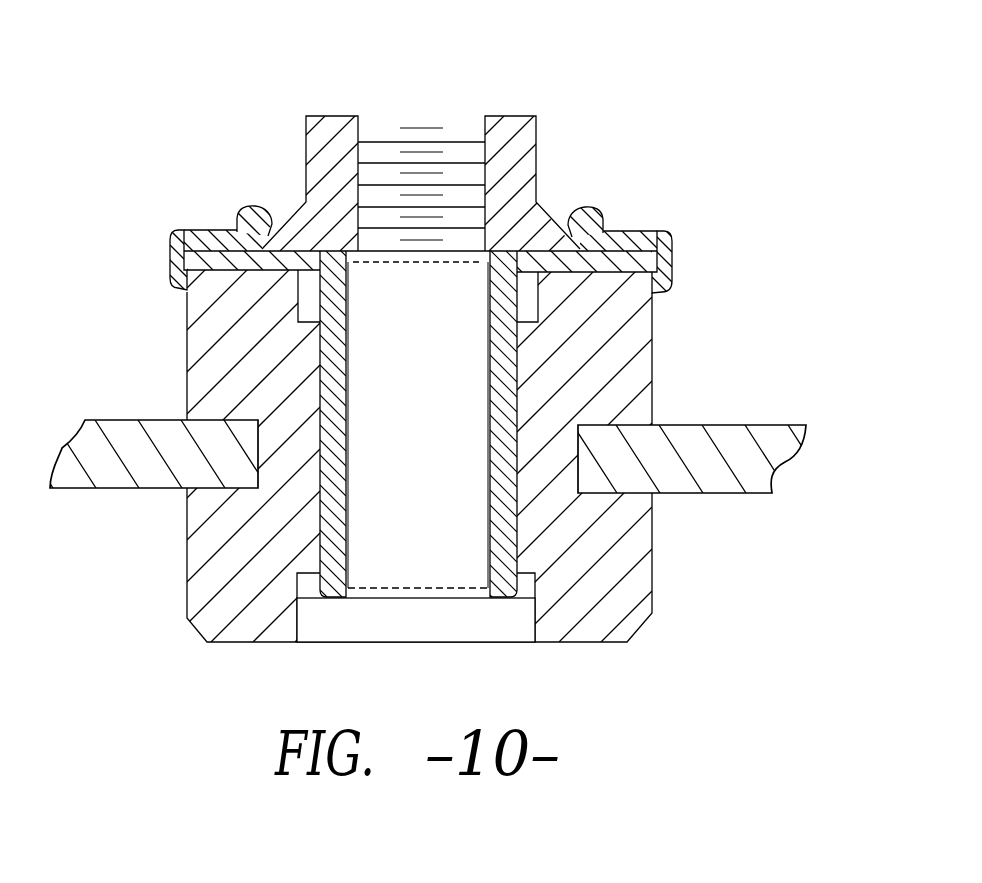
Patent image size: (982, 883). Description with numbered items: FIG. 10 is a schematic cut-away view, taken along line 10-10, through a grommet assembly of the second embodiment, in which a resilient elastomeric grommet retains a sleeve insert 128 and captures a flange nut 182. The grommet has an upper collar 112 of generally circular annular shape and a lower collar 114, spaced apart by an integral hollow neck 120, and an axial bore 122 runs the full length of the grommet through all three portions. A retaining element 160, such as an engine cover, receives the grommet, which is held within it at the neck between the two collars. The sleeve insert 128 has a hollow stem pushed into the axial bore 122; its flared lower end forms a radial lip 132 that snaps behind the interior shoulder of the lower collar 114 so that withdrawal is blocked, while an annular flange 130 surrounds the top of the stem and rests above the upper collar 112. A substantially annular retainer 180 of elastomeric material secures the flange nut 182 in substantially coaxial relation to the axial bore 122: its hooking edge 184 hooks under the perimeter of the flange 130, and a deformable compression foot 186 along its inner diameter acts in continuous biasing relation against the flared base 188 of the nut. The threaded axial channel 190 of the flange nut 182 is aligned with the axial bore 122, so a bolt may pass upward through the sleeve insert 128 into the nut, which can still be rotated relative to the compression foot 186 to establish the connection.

The grommet 10 is at (262, 5).
The upper collar 112 is at (656, 363).
The lower collar 114 is at (656, 568).
The neck 120 is at (580, 457).
The axial bore 122 is at (437, 398).
The sleeve insert 128 is at (332, 516).
The flange 130 is at (613, 263).
The radial lip 132 is at (517, 602).
The panel 160 is at (733, 425).
The annular retainer 180 is at (638, 227).
The flange nut 182 is at (537, 150).
The hooking edge 184 is at (172, 256).
The deformable compression foot 186 is at (247, 214).
The flared base 188 is at (290, 226).
The axial channel 190 is at (458, 150).